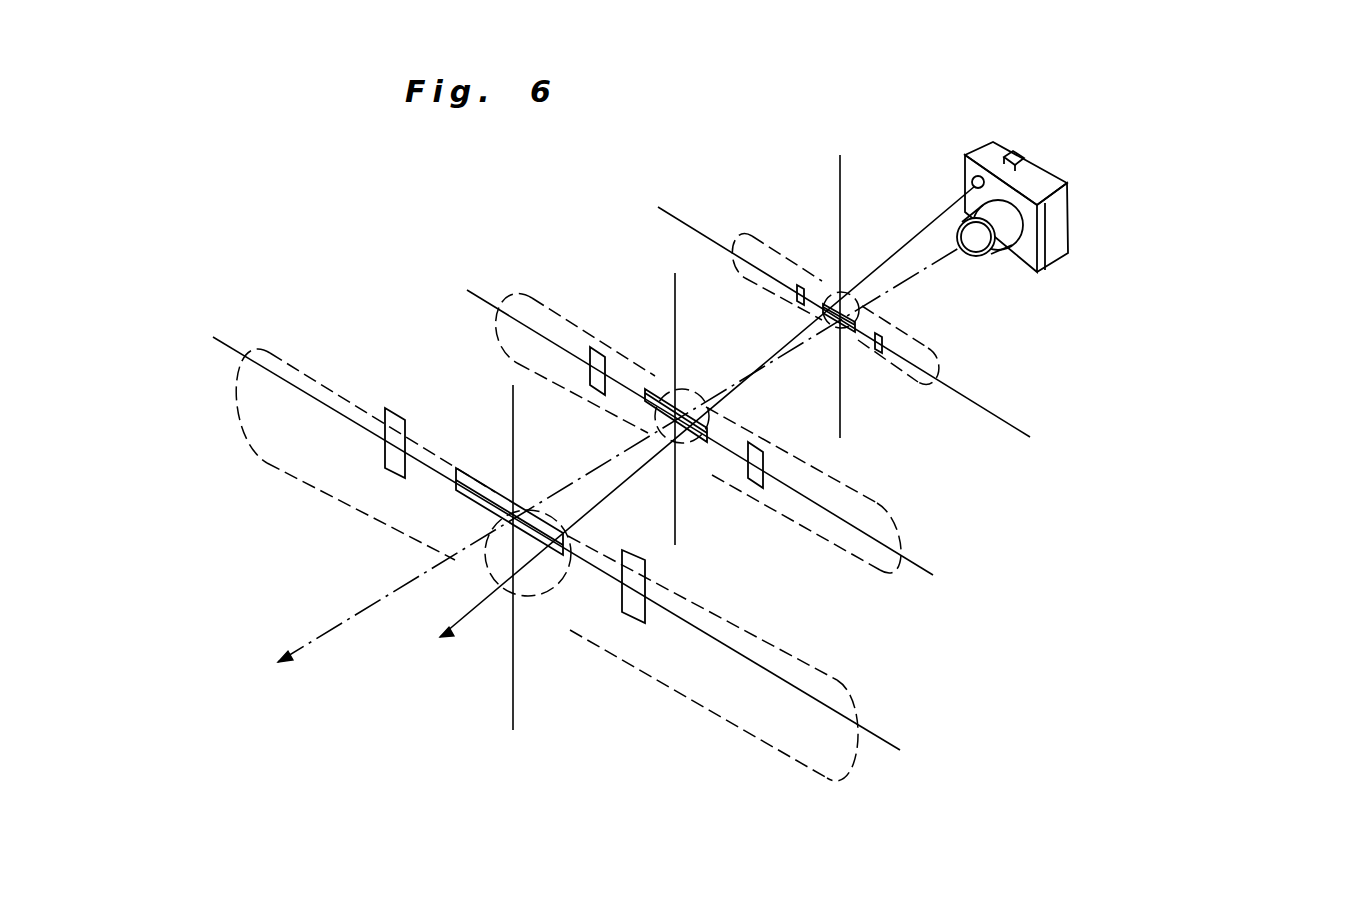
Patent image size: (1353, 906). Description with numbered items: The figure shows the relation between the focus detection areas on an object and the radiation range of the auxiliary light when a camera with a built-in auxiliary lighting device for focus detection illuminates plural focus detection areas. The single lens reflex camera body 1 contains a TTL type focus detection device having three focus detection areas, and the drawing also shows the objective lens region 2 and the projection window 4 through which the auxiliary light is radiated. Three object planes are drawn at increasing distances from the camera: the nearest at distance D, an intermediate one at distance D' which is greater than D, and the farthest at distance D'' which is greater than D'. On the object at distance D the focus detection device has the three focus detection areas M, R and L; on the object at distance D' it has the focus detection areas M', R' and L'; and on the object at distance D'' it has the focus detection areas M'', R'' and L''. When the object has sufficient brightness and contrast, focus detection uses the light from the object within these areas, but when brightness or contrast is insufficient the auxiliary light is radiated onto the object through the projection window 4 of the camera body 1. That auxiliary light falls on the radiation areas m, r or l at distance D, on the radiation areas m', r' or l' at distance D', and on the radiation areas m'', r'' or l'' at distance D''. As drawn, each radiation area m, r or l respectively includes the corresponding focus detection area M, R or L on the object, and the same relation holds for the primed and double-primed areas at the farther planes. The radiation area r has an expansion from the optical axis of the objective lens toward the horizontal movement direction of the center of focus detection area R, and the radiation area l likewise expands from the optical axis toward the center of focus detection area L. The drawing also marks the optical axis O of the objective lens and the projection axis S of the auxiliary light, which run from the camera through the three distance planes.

The single lens reflex camera body 1 is at (1068, 228).
The taking lens 2 is at (988, 255).
The projection window 4 is at (975, 180).
The focus detection area R is at (805, 248).
The focus detection area M is at (887, 308).
The focus detection area L is at (867, 382).
The radiation area r is at (777, 240).
The radiation area m is at (852, 272).
The radiation area l is at (898, 377).
The focus detection area R' is at (607, 322).
The focus detection area M' is at (669, 366).
The focus detection area L' is at (748, 515).
The radiation area r' is at (575, 320).
The radiation area m' is at (690, 379).
The radiation area l' is at (803, 515).
The focus detection area R'' is at (411, 403).
The focus detection area M'' is at (519, 486).
The focus detection area L'' is at (648, 551).
The radiation area r'' is at (365, 465).
The radiation area m'' is at (530, 604).
The radiation area l'' is at (713, 658).
The distance D is at (1087, 371).
The distance D' is at (1075, 457).
The distance D'' is at (1107, 595).
The optical axis of taking lens O is at (614, 463).
The light projecting axis S is at (692, 432).